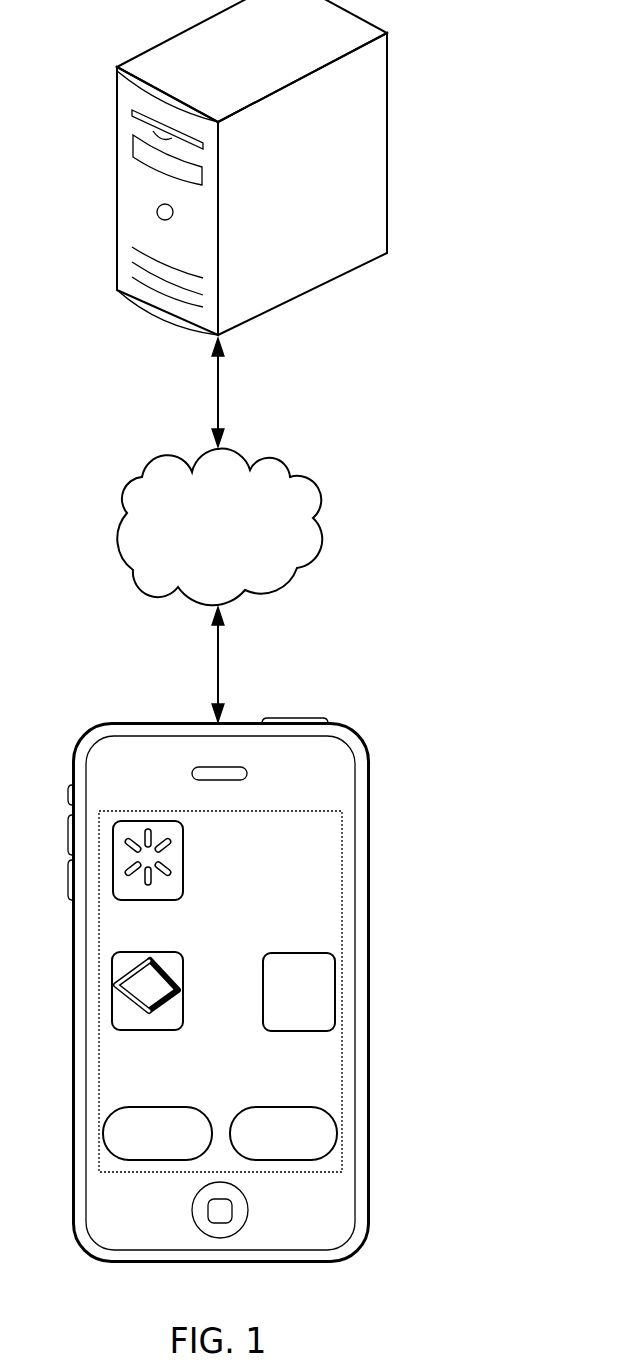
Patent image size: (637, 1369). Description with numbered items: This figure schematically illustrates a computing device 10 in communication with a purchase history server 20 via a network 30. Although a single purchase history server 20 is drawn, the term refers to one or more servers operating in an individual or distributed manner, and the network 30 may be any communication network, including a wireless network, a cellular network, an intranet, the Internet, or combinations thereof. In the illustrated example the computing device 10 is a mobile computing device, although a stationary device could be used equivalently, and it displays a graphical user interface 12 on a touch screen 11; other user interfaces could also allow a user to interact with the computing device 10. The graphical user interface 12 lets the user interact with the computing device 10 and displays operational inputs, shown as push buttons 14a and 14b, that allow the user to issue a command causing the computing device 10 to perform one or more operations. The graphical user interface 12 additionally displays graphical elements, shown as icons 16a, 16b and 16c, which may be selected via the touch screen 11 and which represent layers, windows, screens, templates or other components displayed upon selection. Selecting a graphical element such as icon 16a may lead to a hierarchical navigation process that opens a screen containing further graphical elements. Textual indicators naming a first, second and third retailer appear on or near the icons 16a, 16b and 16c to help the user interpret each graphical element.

The purchase history server 20 is at (387, 137).
The network 30 is at (320, 525).
The computing device 10 is at (96, 732).
The graphical user interface 12 is at (323, 895).
The icon 16a is at (183, 878).
The icon 16b is at (185, 980).
The icon 16c is at (337, 980).
The touch screen 11 is at (342, 1052).
The push button 14a is at (157, 1133).
The push button 14b is at (283, 1133).